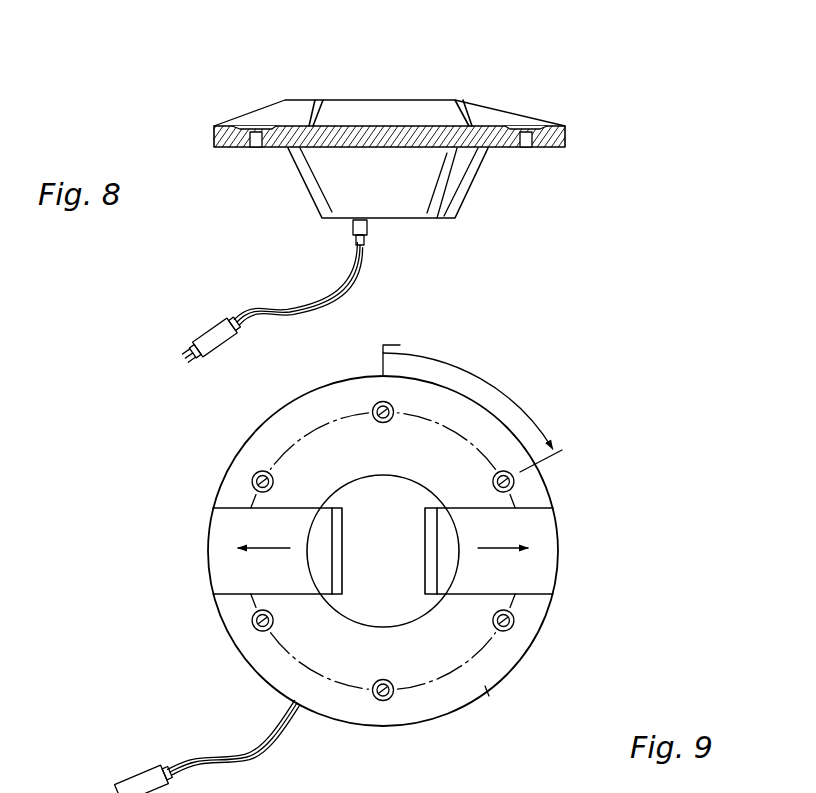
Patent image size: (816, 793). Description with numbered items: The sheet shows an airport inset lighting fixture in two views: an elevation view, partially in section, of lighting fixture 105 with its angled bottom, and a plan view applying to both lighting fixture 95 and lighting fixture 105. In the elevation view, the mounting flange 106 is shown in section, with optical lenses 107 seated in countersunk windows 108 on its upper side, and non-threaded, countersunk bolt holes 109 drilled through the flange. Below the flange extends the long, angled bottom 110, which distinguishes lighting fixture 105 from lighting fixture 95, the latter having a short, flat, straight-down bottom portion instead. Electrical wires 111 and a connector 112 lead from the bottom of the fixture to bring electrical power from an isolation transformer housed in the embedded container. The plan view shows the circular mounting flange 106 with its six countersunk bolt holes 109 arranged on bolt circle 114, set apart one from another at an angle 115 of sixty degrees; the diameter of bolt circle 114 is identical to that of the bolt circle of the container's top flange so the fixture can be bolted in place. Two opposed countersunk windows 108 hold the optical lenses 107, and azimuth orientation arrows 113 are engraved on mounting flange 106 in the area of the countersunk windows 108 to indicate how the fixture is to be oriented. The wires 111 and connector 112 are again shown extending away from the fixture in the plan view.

In FIG. 9, the lighting fixture 95 is at (326, 551).
In FIG. 8, the lighting fixture 105 is at (377, 86).
In FIG. 9, the lighting fixture 105 is at (248, 408).
In FIG. 8, the mounting flange 106 is at (565, 140).
In FIG. 9, the mounting flange 106 is at (550, 610).
In FIG. 8, the optical lenses 107 is at (312, 126).
In FIG. 9, the optical lenses 107 is at (342, 541).
In FIG. 8, the countersunk windows 108 is at (300, 110).
In FIG. 9, the countersunk windows 108 is at (232, 522).
In FIG. 8, the bolt holes 109 is at (253, 126).
In FIG. 9, the bolt holes 109 is at (375, 405).
In FIG. 8, the angled bottom 110 is at (318, 210).
In FIG. 8, the electrical wires 111 is at (327, 300).
In FIG. 9, the electrical wires 111 is at (255, 748).
In FIG. 8, the connector 112 is at (205, 332).
In FIG. 9, the connector 112 is at (130, 790).
In FIG. 9, the azimuth orientation arrows 113 is at (230, 572).
In FIG. 9, the bolt circle 114 is at (503, 714).
In FIG. 9, the angle 115 is at (500, 385).